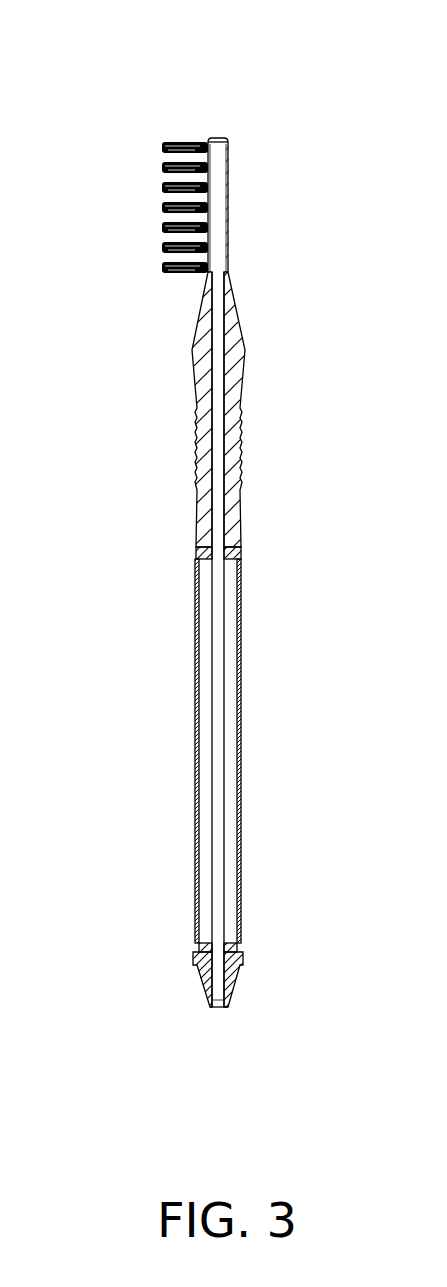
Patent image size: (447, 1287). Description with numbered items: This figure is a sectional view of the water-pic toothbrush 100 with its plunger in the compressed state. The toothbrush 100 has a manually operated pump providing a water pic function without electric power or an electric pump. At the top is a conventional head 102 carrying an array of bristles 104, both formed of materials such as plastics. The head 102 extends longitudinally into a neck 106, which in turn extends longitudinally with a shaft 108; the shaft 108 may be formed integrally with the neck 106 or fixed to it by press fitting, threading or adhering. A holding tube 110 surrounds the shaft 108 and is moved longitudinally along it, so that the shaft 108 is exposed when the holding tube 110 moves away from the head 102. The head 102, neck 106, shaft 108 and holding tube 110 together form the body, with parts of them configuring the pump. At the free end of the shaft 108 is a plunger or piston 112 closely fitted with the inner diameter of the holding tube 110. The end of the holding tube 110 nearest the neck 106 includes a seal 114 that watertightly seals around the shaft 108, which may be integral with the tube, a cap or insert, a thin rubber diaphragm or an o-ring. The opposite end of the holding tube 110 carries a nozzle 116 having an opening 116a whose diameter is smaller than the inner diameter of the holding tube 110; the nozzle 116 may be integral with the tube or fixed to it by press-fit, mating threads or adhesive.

The toothbrush 100 is at (120, 60).
The head 102 is at (247, 222).
The bristles 104 is at (149, 213).
The neck 106 is at (241, 381).
The shaft 108 is at (225, 750).
The holding tube 110 is at (243, 602).
The plunger or piston 112 is at (232, 947).
The seal 114 is at (241, 549).
The nozzle 116 is at (240, 985).
The opening 116a is at (218, 1009).